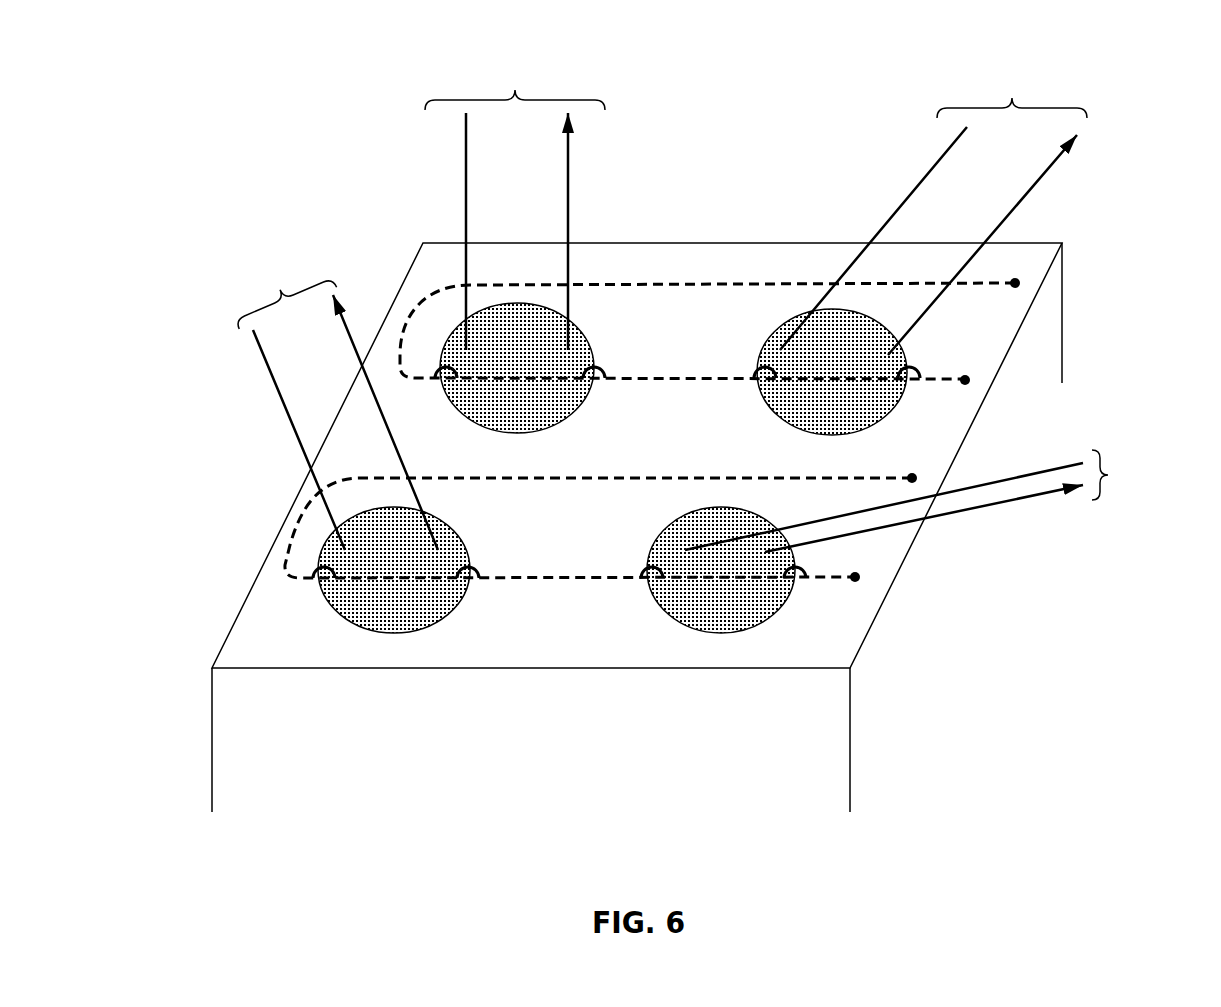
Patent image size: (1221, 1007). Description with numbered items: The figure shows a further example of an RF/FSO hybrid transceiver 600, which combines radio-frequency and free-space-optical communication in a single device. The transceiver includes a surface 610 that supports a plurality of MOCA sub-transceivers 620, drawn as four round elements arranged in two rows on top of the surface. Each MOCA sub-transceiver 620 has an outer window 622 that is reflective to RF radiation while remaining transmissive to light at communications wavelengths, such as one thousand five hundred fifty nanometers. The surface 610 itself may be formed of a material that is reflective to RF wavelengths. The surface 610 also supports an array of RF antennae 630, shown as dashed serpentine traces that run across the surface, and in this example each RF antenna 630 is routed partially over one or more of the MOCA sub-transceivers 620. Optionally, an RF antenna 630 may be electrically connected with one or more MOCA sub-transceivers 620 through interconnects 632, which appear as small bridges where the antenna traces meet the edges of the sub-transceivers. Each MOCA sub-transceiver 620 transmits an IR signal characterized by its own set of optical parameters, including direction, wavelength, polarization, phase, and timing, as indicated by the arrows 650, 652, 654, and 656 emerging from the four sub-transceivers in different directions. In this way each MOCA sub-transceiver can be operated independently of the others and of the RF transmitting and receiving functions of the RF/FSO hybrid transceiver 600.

The RF/FSO hybrid transceiver 600 is at (238, 168).
The surface 610 is at (280, 713).
The MOCA sub-transceivers 620 is at (394, 633).
The outer window 622 is at (435, 603).
The RF antennae 630 is at (723, 283).
The interconnects 632 is at (755, 372).
The arrows 650 is at (515, 181).
The arrows 652 is at (933, 192).
The arrows 654 is at (942, 499).
The arrows 656 is at (334, 386).